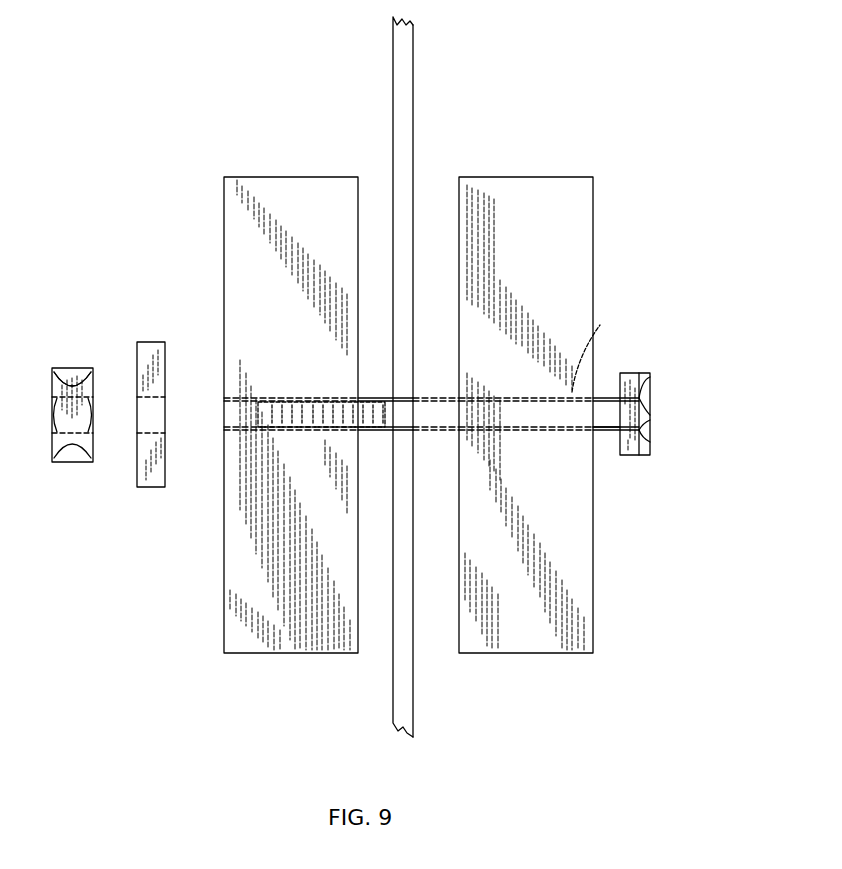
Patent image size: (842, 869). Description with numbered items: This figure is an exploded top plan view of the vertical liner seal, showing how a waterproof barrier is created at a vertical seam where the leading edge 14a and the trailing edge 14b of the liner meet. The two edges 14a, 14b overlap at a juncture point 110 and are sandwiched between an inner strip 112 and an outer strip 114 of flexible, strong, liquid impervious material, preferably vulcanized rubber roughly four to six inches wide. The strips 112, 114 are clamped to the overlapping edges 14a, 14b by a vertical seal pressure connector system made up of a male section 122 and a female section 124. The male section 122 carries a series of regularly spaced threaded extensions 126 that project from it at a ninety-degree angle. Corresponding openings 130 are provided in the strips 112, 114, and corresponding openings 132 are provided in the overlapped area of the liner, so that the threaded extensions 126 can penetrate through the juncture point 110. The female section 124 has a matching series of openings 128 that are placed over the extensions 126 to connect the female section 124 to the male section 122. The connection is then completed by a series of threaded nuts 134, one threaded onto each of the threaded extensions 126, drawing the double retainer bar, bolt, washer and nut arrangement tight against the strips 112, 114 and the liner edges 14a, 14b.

The leading edge 14a is at (393, 128).
The trailing edge 14b is at (413, 52).
The juncture point 110 is at (413, 229).
The inner strip 112 is at (248, 637).
The outer strip 114 is at (593, 613).
The male section 122 is at (650, 433).
The female section 124 is at (149, 490).
The threaded extensions 126 is at (605, 433).
The openings 128 is at (137, 415).
The openings 130 is at (224, 410).
The openings 132 is at (380, 430).
The threaded nuts 134 is at (84, 368).